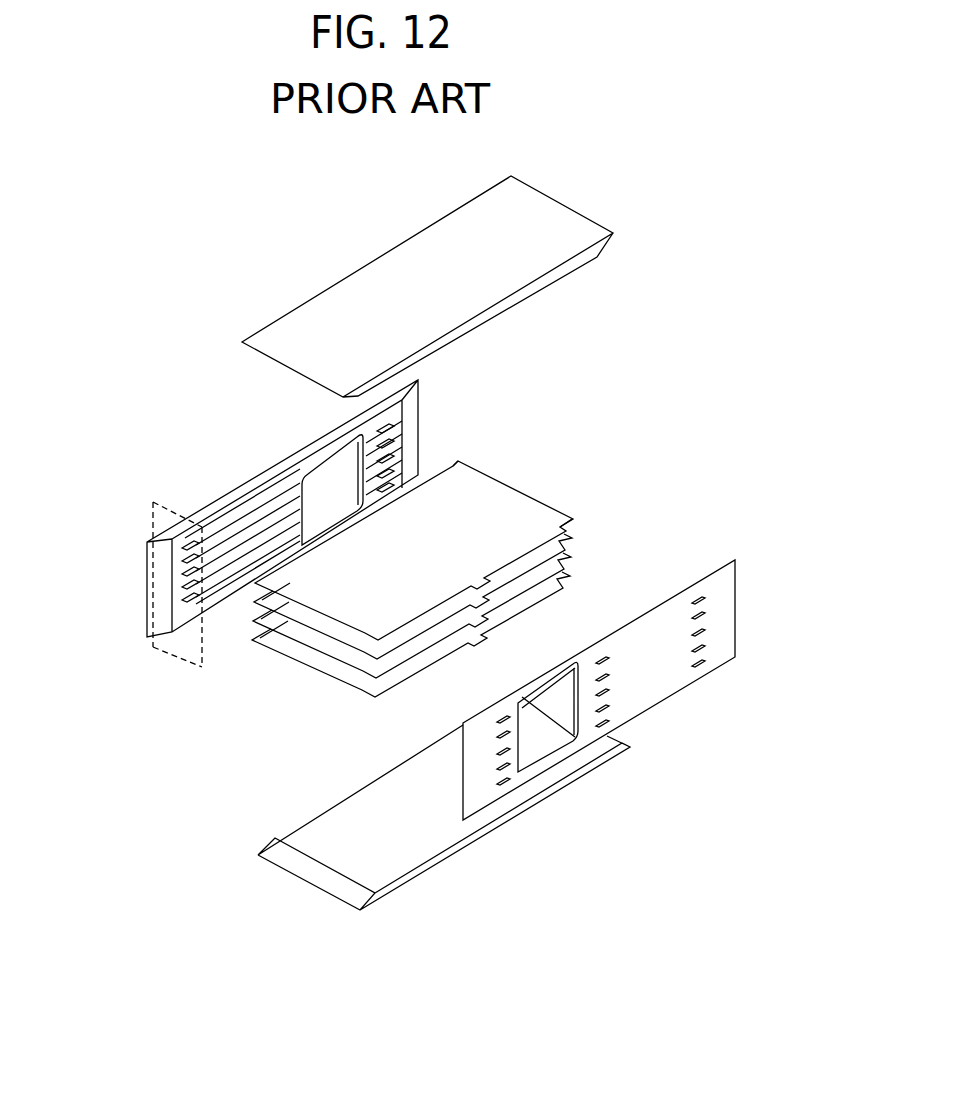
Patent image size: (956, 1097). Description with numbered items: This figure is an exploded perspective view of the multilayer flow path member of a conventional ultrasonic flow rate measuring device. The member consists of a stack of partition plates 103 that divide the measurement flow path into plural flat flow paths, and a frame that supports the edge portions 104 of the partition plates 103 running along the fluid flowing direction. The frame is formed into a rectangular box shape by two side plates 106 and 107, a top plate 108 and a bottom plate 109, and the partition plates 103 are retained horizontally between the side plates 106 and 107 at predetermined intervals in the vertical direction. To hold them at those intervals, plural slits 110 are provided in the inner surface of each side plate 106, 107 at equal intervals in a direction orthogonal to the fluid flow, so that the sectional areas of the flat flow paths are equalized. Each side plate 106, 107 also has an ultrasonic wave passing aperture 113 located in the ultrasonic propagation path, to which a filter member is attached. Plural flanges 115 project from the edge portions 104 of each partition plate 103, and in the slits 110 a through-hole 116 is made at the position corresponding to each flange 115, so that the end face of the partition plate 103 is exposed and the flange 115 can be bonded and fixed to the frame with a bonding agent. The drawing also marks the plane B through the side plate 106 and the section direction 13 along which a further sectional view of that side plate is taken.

The partition plate 103 is at (312, 653).
The edge portion 104 is at (432, 480).
The side plate 106 is at (265, 470).
The side plate 107 is at (637, 662).
The top plate 108 is at (345, 312).
The bottom plate 109 is at (442, 837).
The slit 110 is at (266, 541).
The ultrasonic wave passing aperture 113 is at (338, 475).
The flange 115 is at (462, 461).
The through-hole 116 is at (390, 487).
The section direction 13- 13 is at (172, 512).
The plane B is at (180, 640).